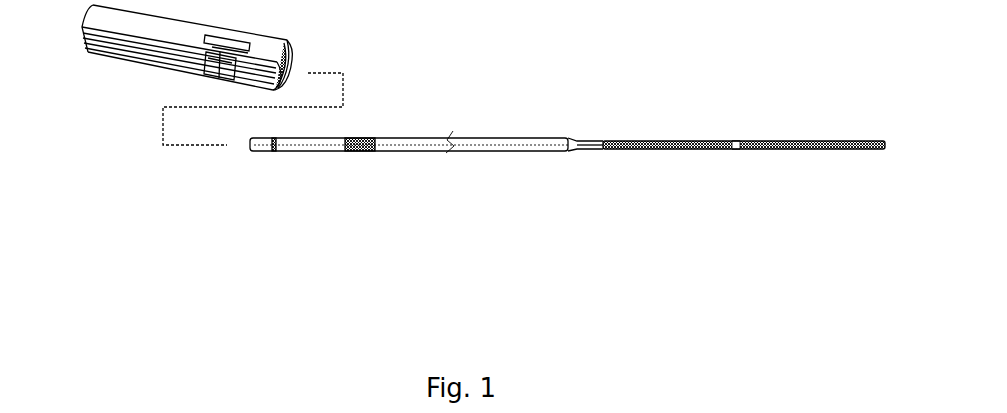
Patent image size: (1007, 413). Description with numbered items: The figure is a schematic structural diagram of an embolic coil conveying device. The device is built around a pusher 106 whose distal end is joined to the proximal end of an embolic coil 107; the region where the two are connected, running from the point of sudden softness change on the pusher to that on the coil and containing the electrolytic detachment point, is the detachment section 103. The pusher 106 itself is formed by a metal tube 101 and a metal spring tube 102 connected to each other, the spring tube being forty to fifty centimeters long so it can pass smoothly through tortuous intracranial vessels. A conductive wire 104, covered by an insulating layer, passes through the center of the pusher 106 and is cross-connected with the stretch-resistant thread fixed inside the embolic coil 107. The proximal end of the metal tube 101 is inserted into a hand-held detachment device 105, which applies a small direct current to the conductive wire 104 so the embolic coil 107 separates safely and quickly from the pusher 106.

The metal tube 101 is at (397, 152).
The metal spring tube 102 is at (648, 152).
The detachment section 103 is at (715, 257).
The conductive wire 104 is at (500, 147).
The detachment device 105 is at (135, 72).
The pusher 106 is at (730, 151).
The embolic coil 107 is at (747, 150).